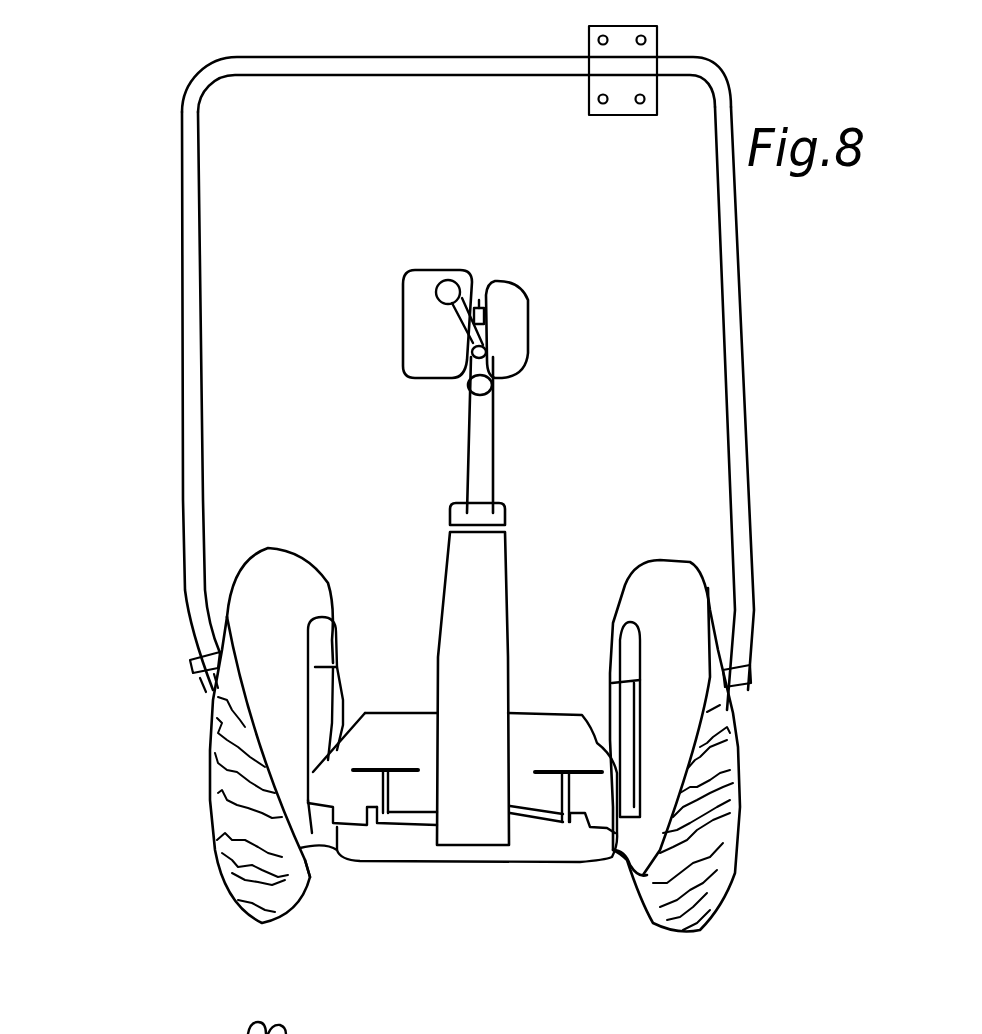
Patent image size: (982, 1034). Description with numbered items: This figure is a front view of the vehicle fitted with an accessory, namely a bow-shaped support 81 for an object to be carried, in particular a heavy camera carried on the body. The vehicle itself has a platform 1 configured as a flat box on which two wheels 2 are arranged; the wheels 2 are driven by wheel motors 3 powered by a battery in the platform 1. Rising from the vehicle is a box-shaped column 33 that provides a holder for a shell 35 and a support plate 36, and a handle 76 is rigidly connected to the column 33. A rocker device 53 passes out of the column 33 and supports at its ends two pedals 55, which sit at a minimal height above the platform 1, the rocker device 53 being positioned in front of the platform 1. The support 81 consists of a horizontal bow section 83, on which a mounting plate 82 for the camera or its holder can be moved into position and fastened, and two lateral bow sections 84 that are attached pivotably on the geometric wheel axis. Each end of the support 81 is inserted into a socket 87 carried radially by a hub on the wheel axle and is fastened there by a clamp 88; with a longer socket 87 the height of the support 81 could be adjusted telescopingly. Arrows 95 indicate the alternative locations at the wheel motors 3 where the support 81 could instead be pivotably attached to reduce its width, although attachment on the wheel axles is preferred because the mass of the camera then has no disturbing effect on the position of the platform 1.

The bow-shaped support 81 is at (157, 159).
The mounting plate 82 is at (650, 45).
The horizontal bow section 83 is at (450, 68).
The lateral bow sections 84 is at (183, 245).
The clamp 88 is at (197, 645).
The socket 87 is at (207, 683).
The wheels 2 is at (235, 818).
The arrows 95 is at (340, 730).
The wheel motors 3 is at (615, 660).
The platform 1 is at (375, 733).
The pedals 55 is at (385, 768).
The rocker device 53 is at (423, 822).
The box-shaped column 33 is at (493, 627).
The shell 35 is at (415, 332).
The support plate 36 is at (522, 330).
The handle 76 is at (455, 290).